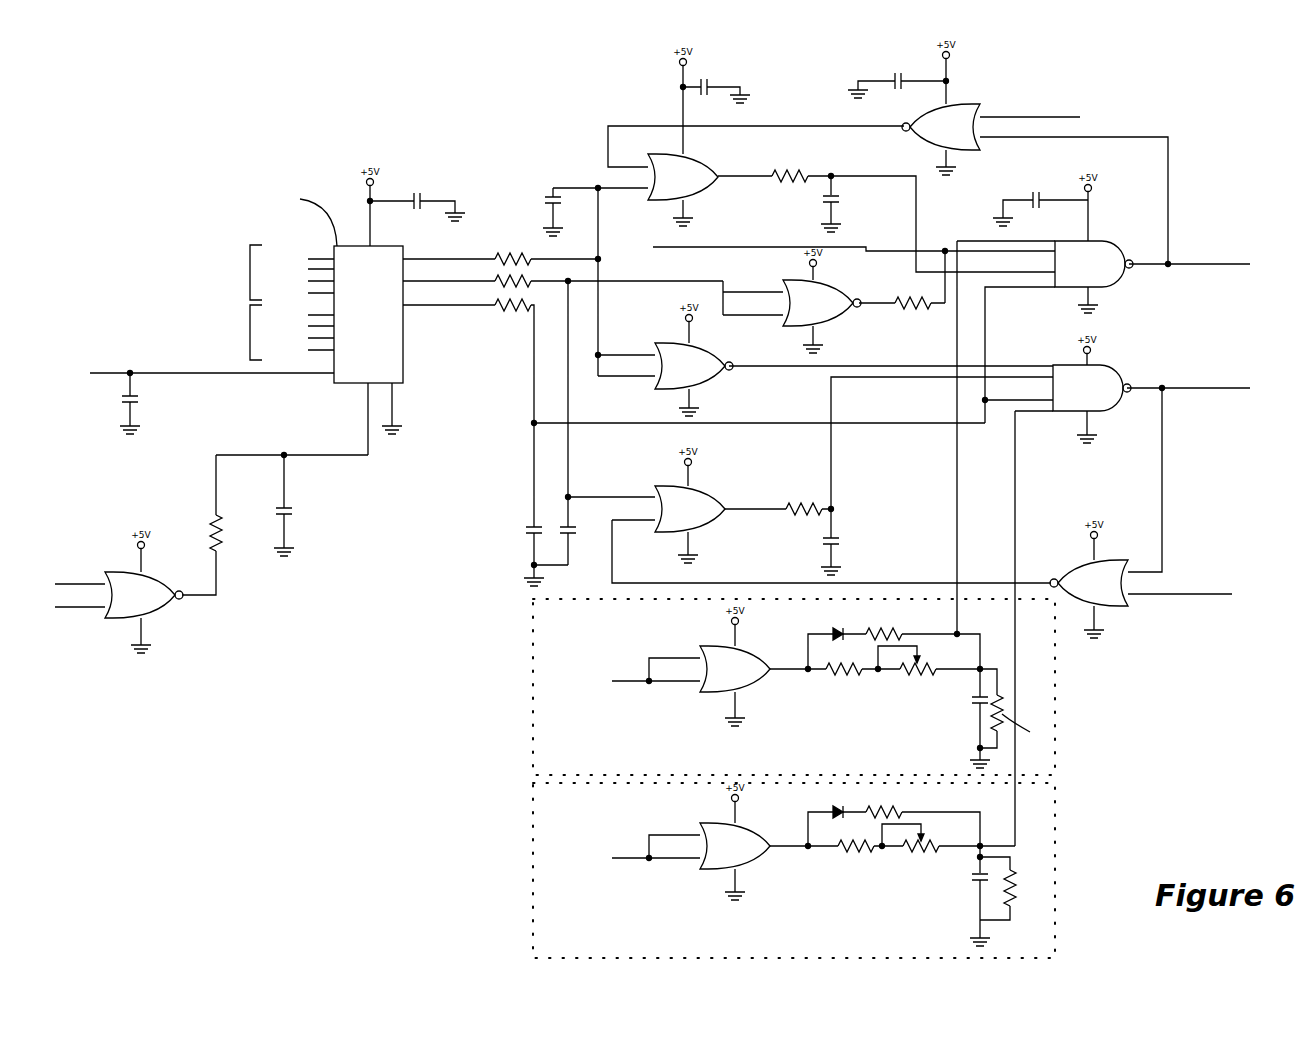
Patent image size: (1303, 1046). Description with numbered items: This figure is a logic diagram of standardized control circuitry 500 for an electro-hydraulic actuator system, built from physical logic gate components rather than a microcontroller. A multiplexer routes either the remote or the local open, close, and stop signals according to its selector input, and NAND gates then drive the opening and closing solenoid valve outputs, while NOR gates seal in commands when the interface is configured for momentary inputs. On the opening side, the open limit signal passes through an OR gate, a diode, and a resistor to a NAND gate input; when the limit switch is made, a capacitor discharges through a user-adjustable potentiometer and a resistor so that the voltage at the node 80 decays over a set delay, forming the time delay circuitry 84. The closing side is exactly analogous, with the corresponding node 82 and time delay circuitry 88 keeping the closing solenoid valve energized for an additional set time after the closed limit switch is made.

The control circuitry 500 is at (496, 84).
The node 80 is at (985, 668).
The closed limit node 82 is at (985, 845).
The time delay circuitry 84 is at (1054, 716).
The closed limit timing circuit 88 is at (1054, 916).